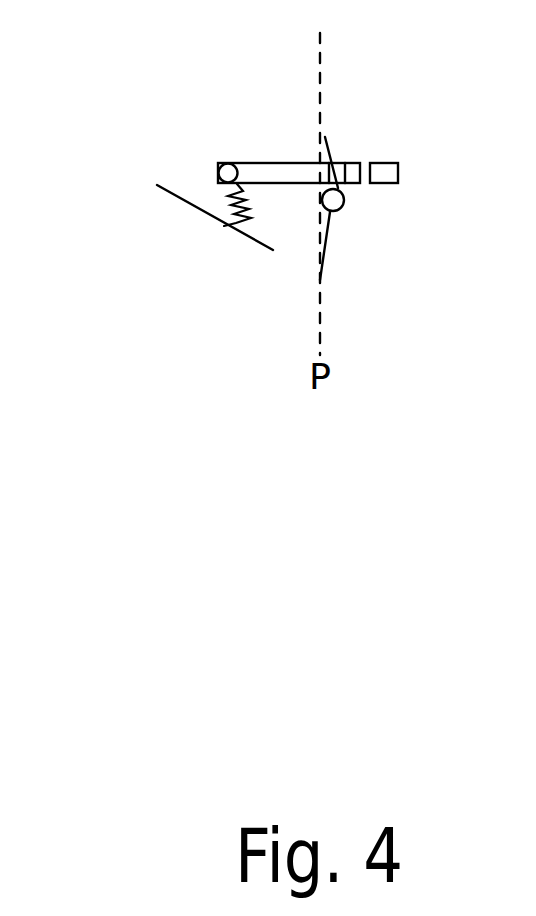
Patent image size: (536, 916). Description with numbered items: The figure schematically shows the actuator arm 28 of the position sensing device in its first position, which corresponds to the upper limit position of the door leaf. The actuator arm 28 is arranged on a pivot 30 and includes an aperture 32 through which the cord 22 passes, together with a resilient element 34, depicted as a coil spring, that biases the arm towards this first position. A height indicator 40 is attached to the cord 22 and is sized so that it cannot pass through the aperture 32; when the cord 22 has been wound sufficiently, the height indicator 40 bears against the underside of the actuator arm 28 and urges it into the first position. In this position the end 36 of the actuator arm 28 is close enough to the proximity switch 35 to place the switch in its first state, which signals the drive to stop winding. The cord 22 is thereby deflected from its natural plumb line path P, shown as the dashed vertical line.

The cord 22 is at (327, 137).
The actuator arm 28 is at (277, 173).
The pivot 30 is at (220, 168).
The aperture 32 is at (341, 188).
The resilient element 34 is at (227, 227).
The proximity switch 35 is at (391, 168).
The end of the actuator arm 36 is at (361, 162).
The height indicator 40 is at (337, 212).